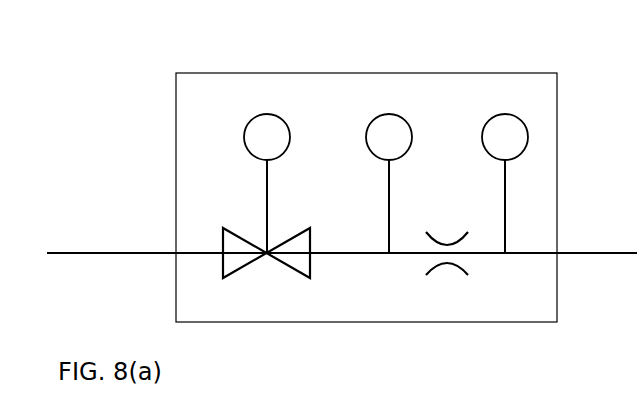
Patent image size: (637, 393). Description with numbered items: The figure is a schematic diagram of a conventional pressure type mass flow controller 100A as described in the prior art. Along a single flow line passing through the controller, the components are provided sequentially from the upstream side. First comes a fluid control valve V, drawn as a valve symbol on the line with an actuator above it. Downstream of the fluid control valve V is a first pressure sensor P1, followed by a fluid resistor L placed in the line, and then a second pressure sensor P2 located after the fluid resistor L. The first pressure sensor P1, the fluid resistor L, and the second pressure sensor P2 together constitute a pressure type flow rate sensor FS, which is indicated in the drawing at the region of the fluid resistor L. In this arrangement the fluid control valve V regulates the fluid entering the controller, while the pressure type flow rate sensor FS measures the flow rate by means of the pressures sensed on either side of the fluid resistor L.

The pressure type mass flow controller 100A is at (176, 140).
The fluid control valve V is at (241, 268).
The first pressure sensor P1 is at (389, 183).
The second pressure sensor P2 is at (505, 183).
The fluid resistor L is at (447, 245).
The pressure type flow rate sensor FS is at (472, 283).